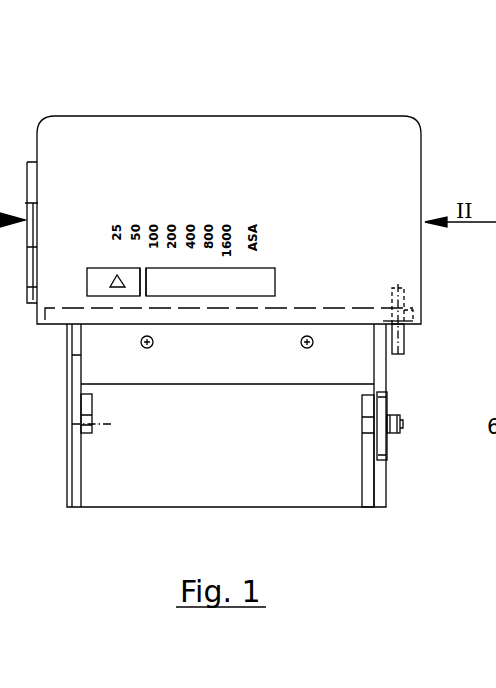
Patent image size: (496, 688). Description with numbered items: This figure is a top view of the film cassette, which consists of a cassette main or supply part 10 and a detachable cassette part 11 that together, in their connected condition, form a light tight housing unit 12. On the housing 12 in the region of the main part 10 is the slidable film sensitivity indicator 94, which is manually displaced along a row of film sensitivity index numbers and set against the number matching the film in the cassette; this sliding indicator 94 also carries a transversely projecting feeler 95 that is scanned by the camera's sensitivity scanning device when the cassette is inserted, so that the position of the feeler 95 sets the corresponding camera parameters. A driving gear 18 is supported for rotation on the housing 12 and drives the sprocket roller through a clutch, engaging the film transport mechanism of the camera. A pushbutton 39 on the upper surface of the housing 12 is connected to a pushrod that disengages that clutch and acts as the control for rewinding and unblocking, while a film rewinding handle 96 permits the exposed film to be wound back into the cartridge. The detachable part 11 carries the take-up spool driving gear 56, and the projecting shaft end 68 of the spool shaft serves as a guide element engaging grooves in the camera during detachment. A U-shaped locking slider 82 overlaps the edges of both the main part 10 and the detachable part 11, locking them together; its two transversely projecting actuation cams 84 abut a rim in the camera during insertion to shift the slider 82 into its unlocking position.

The cassette main part 10 is at (218, 134).
The detachable cassette part 11 is at (133, 492).
The light tight housing unit 12 is at (424, 174).
The driving gear 18 is at (398, 340).
The pushbutton 39 is at (495, 328).
The driving gear 56 is at (383, 444).
The projecting shaft end 68 is at (403, 424).
The locking slider 82 is at (100, 377).
The actuation cams 84 is at (142, 347).
The film sensitivity indicator 94 is at (100, 282).
The feeler 95 is at (144, 280).
The film rewinding handle 96 is at (495, 260).